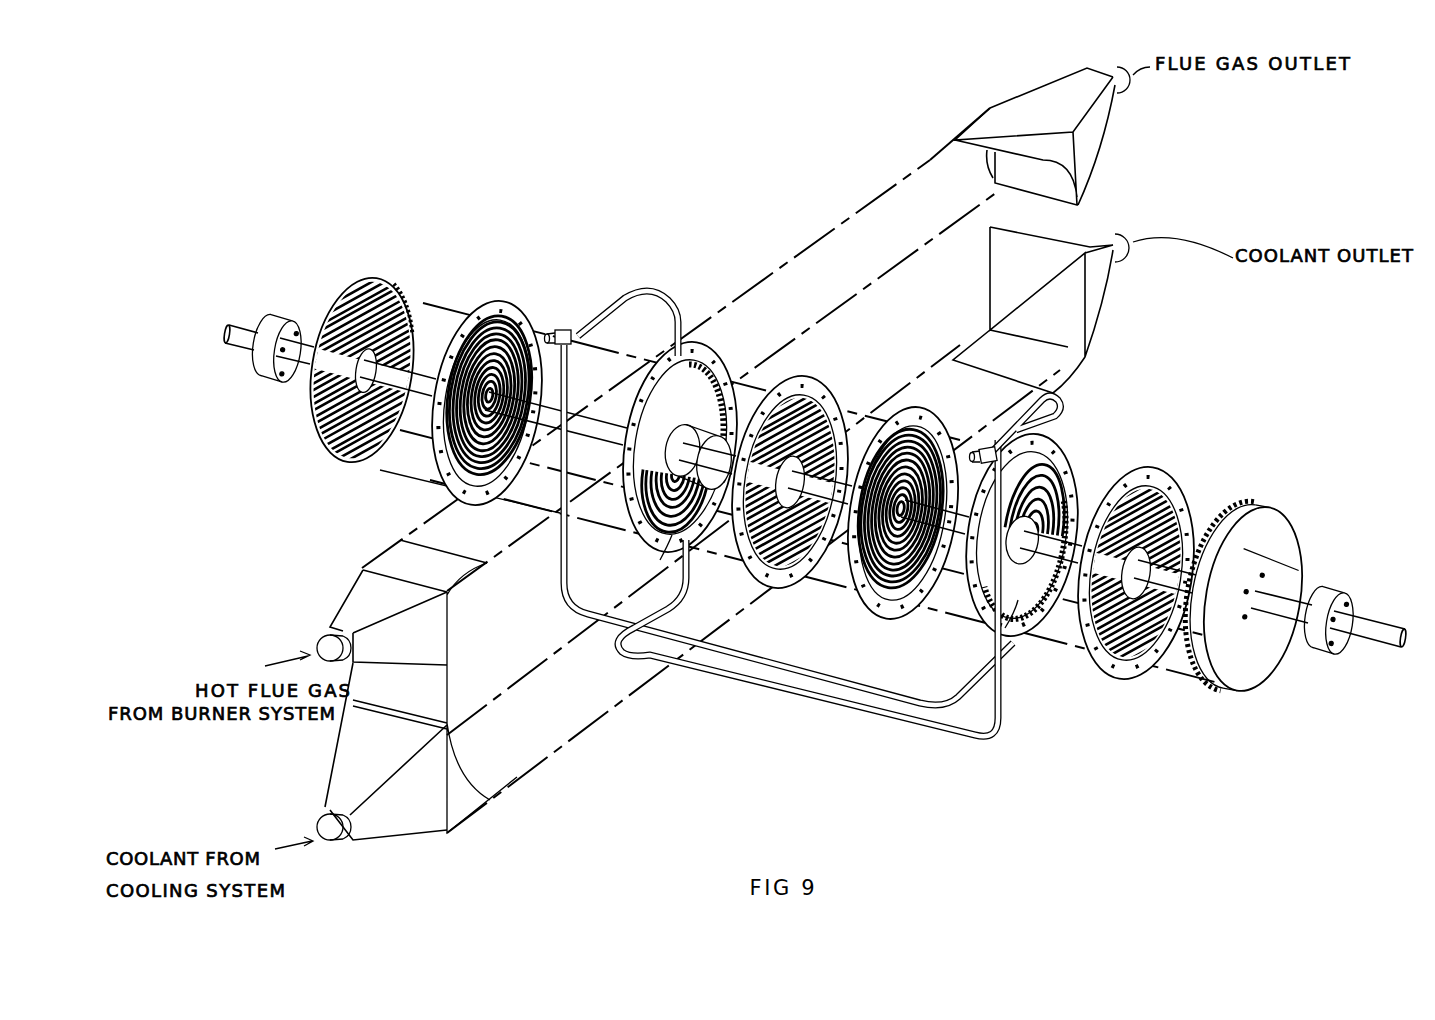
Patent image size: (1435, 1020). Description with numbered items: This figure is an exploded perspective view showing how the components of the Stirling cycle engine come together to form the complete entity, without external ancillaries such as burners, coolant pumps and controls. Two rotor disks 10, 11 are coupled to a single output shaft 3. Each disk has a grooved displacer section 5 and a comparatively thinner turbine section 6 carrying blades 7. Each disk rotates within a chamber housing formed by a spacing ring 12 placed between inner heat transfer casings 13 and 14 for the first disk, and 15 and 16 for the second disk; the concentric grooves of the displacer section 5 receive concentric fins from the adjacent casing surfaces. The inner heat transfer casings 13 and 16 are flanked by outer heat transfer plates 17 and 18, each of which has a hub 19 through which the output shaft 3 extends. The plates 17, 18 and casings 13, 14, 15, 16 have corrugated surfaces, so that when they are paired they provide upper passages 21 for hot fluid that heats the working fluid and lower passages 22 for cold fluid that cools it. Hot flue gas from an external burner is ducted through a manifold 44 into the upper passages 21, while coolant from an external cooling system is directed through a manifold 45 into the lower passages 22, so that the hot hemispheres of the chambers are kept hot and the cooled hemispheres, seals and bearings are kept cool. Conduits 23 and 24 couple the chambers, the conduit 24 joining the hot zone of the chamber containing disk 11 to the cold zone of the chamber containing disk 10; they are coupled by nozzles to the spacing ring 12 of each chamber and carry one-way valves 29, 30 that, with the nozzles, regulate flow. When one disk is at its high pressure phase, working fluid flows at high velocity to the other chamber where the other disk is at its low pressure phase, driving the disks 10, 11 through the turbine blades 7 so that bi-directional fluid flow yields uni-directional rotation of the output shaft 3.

The output shaft 3 is at (1395, 628).
The displacer section 5 is at (648, 522).
The turbine section 6 is at (640, 484).
The blades 7 is at (712, 377).
The rotor disk 10 is at (698, 446).
The rotor disk 11 is at (1022, 554).
The spacing ring 12 is at (700, 343).
The inner heat transfer casing 13 is at (500, 303).
The inner heat transfer casing 14 is at (790, 482).
The inner heat transfer casing 15 is at (903, 501).
The inner heat transfer casing 16 is at (1162, 474).
The outer heat transfer plate 17 is at (368, 281).
The outer heat transfer plate 18 is at (1265, 507).
The hub 19 is at (280, 324).
The upper passages 21 is at (405, 302).
The lower passages 22 is at (348, 462).
The conduit 23 is at (862, 692).
The conduit 24 is at (892, 726).
The one-way valve 29 is at (561, 333).
The one-way valve 30 is at (1055, 404).
The manifold 44 is at (353, 600).
The manifold 45 is at (420, 817).